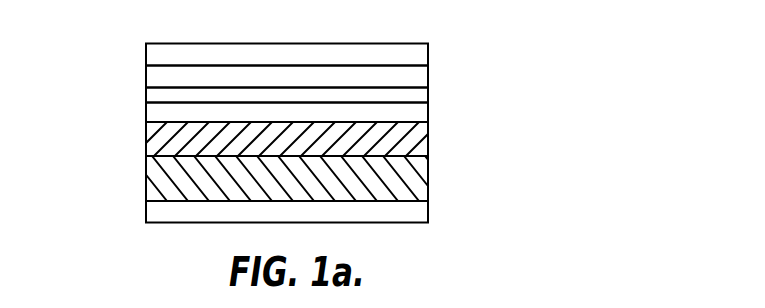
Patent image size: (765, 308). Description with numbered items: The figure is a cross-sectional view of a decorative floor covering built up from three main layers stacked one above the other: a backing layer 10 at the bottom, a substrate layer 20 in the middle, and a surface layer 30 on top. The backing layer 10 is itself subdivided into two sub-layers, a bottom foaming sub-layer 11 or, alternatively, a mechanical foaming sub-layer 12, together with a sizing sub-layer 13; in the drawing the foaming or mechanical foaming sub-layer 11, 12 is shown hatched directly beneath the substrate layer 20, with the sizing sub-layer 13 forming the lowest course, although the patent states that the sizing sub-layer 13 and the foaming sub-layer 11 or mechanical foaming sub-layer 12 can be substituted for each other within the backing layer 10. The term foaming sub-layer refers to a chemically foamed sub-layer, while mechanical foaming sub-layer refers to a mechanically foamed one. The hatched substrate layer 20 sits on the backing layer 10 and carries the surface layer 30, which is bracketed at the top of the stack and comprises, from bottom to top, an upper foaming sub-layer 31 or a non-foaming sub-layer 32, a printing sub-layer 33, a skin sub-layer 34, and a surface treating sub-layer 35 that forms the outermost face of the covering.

The backing layer 10 is at (328, 188).
The bottom foaming sub-layer 11 is at (369, 176).
The mechanical foaming sub-layer 12 is at (428, 176).
The sizing sub-layer 13 is at (428, 210).
The substrate layer 20 is at (146, 144).
The surface layer 30 is at (328, 77).
The upper foaming sub-layer 31 is at (387, 127).
The non-foaming sub-layer 32 is at (428, 114).
The printing sub-layer 33 is at (428, 95).
The skin sub-layer 34 is at (428, 76).
The surface treating sub-layer 35 is at (428, 52).